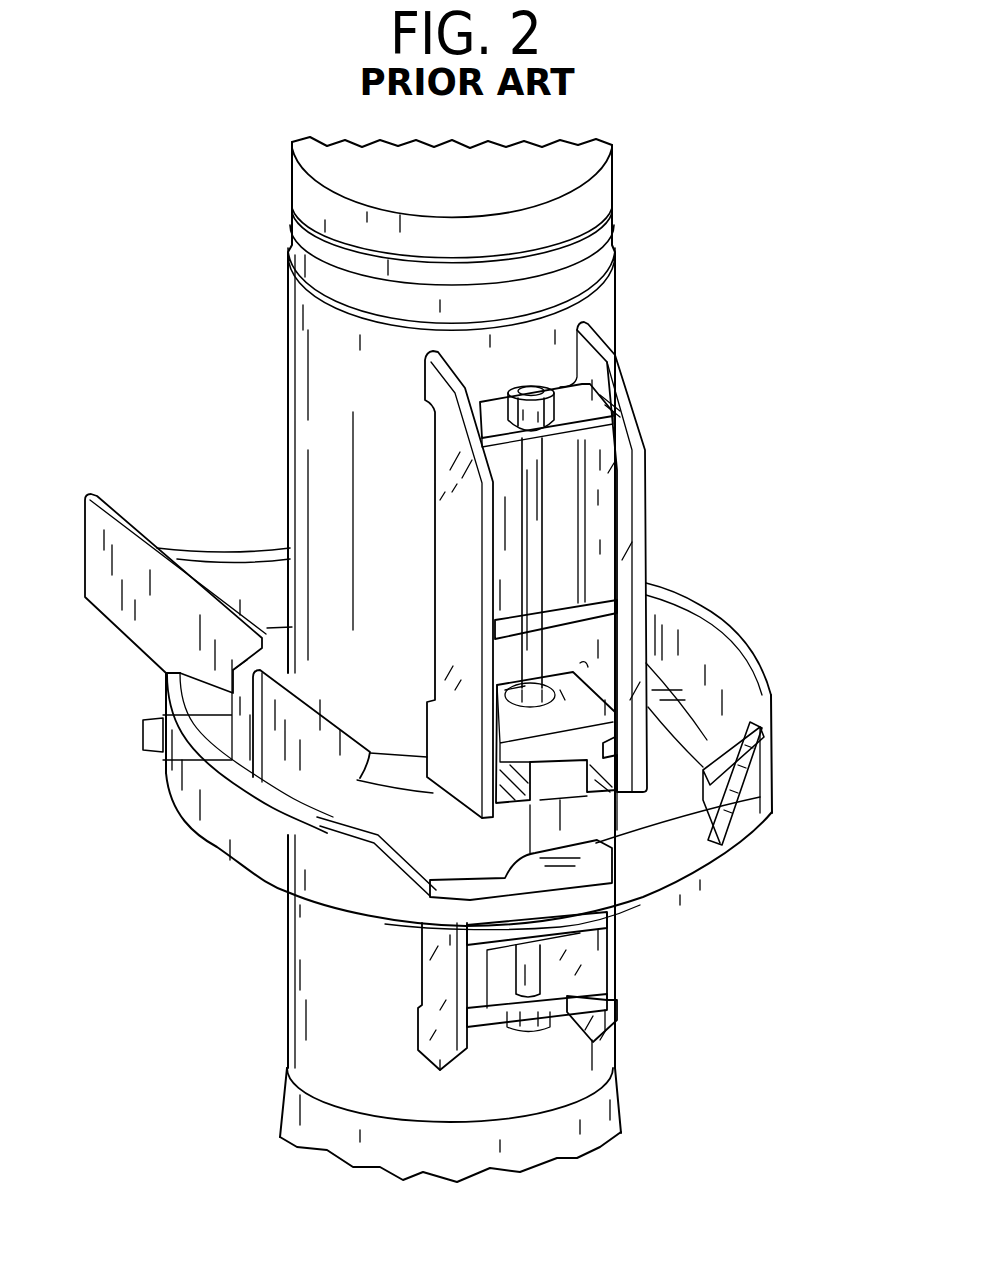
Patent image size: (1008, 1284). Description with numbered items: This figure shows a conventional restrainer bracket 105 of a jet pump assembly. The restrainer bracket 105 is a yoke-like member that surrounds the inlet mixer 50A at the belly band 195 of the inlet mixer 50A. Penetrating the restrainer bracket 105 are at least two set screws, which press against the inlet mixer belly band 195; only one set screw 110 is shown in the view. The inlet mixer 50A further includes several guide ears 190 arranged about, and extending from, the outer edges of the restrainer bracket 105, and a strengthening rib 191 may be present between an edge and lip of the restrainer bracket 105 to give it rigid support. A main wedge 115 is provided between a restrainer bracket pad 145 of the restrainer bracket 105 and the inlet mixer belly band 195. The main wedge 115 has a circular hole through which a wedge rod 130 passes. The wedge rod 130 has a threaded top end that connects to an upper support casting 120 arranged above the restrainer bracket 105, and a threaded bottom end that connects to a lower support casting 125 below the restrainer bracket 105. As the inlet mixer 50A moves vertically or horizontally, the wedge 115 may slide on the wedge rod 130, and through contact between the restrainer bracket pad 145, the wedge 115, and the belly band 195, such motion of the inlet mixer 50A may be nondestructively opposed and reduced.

The inlet mixer 50A is at (300, 432).
The restrainer bracket 105 is at (722, 636).
The set screw 110 is at (143, 737).
The main wedge 115 is at (722, 823).
The upper support casting 120 is at (648, 436).
The lower support casting 125 is at (620, 998).
The wedge rod 130 is at (540, 537).
The restrainer bracket pad 145 is at (590, 862).
The guide ear 190 is at (140, 557).
The strengthening rib 191 is at (722, 779).
The belly band 195 is at (323, 817).